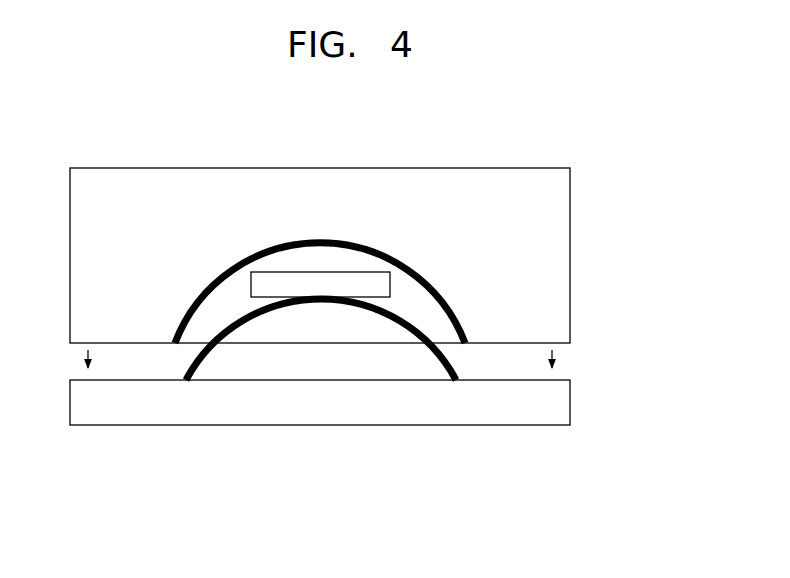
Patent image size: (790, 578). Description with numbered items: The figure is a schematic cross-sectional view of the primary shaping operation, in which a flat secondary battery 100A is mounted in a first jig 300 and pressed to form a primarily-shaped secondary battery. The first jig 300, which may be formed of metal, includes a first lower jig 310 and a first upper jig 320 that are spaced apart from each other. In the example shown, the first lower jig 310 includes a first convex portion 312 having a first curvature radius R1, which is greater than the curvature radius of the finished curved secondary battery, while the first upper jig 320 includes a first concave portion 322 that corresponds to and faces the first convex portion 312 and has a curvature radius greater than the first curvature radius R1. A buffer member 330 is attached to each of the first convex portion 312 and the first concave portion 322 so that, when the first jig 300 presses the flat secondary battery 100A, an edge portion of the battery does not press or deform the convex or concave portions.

The first jig 300 is at (667, 250).
The first upper jig 320 is at (365, 325).
The first concave portion 322 is at (437, 313).
The first lower jig 310 is at (365, 390).
The first convex portion 312 is at (266, 331).
The buffer member 330 is at (220, 276).
The flat secondary battery 100A is at (318, 272).
The first curvature radius R1 is at (321, 453).